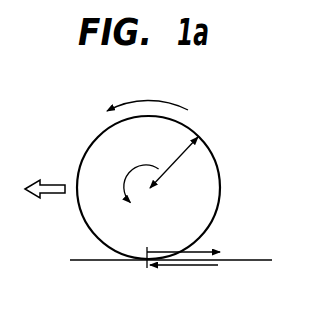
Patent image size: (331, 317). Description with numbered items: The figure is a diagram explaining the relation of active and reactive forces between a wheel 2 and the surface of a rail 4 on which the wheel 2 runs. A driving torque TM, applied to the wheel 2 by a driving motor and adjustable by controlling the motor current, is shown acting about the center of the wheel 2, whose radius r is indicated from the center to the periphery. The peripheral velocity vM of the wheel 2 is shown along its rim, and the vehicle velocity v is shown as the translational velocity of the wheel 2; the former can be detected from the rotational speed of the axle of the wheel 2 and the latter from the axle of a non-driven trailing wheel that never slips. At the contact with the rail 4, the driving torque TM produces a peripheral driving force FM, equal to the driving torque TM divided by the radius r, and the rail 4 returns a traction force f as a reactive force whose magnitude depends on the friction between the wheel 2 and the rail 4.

The wheel 2 is at (220, 182).
The rail 4 is at (83, 260).
The peripheral velocity of the wheel vM is at (147, 93).
The driving torque TM is at (129, 179).
The radius of the wheel r is at (174, 162).
The vehicle velocity v is at (45, 177).
The peripheral driving force FM is at (197, 252).
The traction force f is at (186, 276).